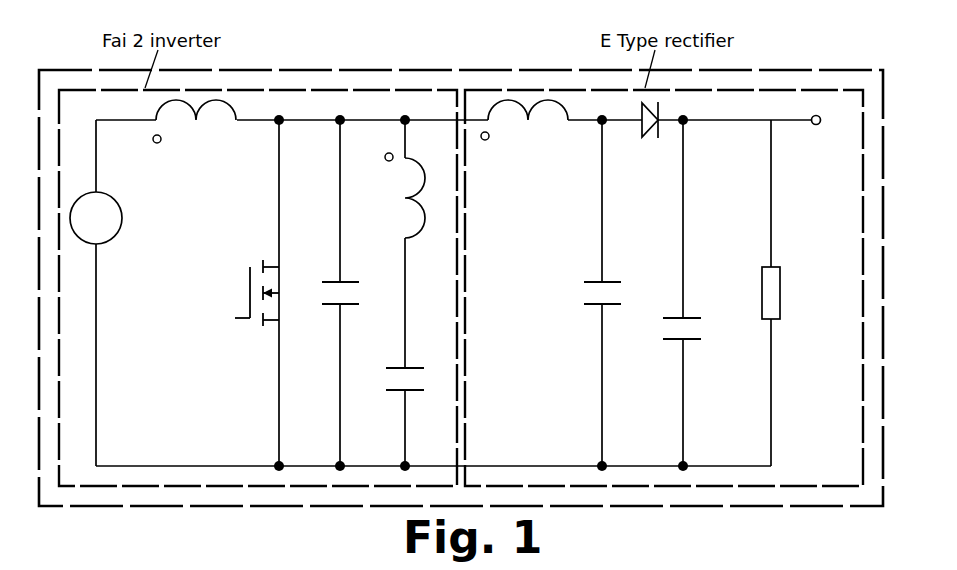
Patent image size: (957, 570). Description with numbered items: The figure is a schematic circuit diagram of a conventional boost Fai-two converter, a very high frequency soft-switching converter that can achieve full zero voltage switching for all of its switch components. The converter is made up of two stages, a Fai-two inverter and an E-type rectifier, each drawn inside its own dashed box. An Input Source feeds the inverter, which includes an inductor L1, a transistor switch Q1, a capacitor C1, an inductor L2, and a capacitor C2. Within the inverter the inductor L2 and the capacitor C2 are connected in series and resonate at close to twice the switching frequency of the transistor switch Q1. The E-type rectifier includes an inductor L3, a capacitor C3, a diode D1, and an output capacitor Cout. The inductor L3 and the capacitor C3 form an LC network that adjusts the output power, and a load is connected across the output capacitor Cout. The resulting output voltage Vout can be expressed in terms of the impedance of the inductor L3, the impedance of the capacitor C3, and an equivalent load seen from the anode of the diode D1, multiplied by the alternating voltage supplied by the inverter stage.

The input voltage source Input Source is at (123, 239).
The inductor L1 is at (194, 126).
The inductor L2 is at (417, 195).
The inductor L3 is at (524, 126).
The transistor switch Q1 is at (256, 303).
The capacitor C1 is at (349, 278).
The capacitor C2 is at (414, 364).
The capacitor C3 is at (612, 278).
The output capacitor Cout is at (701, 314).
The diode D1 is at (652, 133).
The output voltage Vout is at (807, 135).